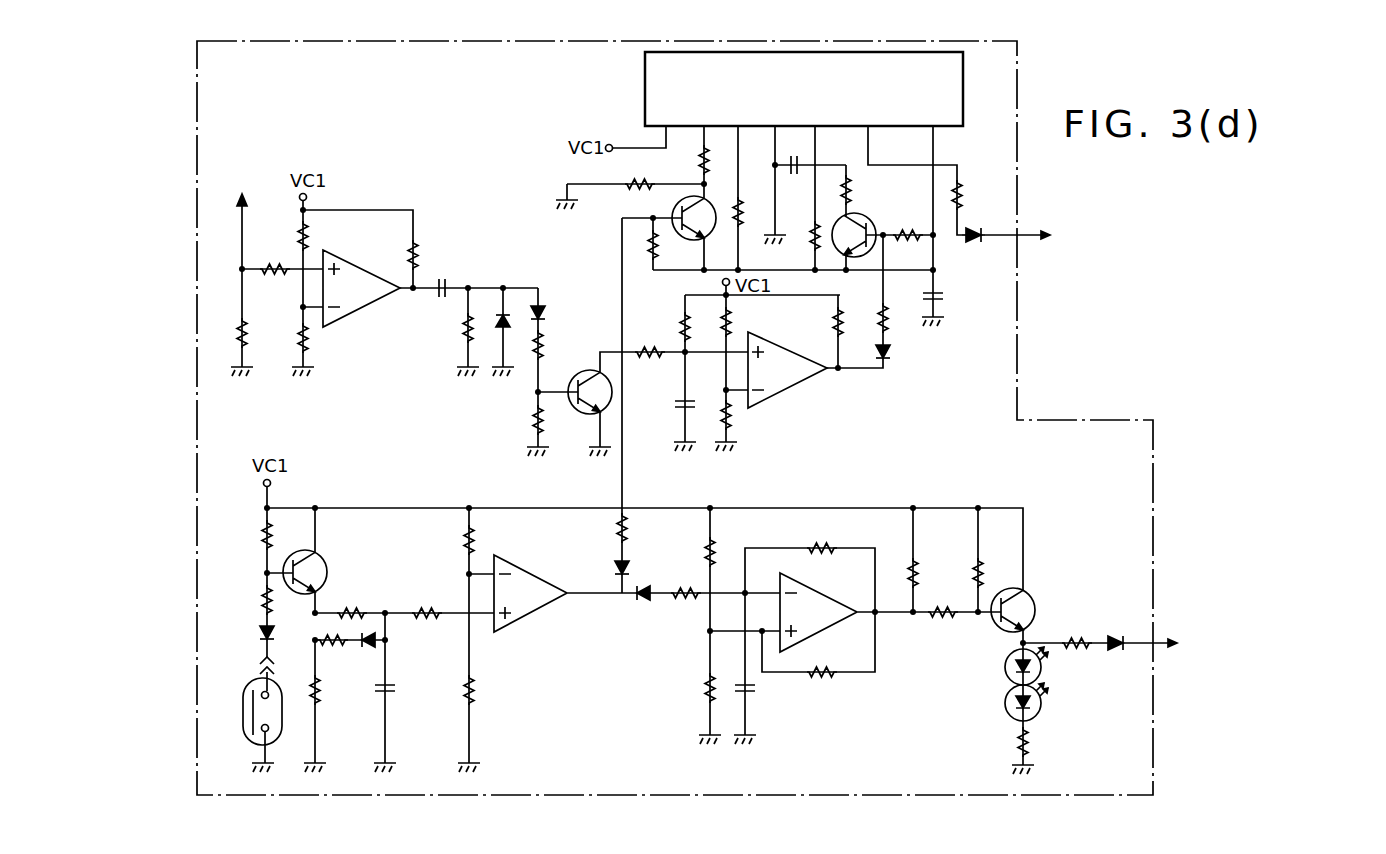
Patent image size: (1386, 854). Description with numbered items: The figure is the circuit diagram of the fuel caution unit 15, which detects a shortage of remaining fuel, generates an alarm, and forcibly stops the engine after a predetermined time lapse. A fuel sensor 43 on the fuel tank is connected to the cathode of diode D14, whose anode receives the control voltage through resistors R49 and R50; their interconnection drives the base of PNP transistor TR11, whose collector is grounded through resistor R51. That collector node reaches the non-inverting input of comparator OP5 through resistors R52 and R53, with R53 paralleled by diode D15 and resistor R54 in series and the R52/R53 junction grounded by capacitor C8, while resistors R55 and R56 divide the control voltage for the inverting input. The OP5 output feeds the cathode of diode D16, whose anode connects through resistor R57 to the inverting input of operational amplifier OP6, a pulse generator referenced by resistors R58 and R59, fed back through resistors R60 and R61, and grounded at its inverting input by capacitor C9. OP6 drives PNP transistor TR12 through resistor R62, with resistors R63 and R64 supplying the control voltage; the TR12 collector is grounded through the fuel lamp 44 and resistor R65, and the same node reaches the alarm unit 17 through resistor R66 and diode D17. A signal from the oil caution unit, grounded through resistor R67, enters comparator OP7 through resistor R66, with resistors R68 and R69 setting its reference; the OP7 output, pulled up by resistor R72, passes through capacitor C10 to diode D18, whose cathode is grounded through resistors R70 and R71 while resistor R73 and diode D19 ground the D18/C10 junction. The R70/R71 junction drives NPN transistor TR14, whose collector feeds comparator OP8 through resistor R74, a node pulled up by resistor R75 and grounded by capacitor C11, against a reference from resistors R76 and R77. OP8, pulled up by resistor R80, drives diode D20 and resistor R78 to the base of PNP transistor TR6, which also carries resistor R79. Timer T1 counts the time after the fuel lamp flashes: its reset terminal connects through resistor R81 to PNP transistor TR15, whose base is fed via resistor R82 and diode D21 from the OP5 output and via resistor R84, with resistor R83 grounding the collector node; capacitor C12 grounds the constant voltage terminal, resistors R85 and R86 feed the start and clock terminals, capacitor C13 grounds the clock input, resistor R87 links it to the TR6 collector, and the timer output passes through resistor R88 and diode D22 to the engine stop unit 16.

The fuel caution unit 15 is at (1017, 402).
The engine stop unit 16 is at (1137, 235).
The alarm unit 17 is at (1238, 643).
The fuel sensor 43 is at (272, 742).
The fuel lamp 44 is at (1006, 686).
The timer T1 is at (645, 78).
The PNP transistor TR15 is at (669, 227).
The PNP transistor TR6 is at (863, 232).
The NPN transistor TR14 is at (589, 400).
The PNP transistor TR11 is at (323, 560).
The PNP transistor TR12 is at (1040, 613).
The comparator OP5 is at (537, 619).
The operational amplifier OP6 is at (825, 593).
The comparator OP7 is at (348, 264).
The comparator OP8 is at (787, 394).
The resistor R49 is at (244, 600).
The resistor R50 is at (245, 536).
The resistor R51 is at (335, 723).
The resistor R52 is at (431, 599).
The resistor R53 is at (356, 599).
The resistor R54 is at (339, 652).
The resistor R55 is at (449, 540).
The resistor R56 is at (488, 723).
The resistor R57 is at (686, 582).
The resistor R58 is at (688, 552).
The resistor R59 is at (689, 708).
The resistor R60 is at (821, 538).
The resistor R61 is at (819, 687).
The resistor R62 is at (947, 600).
The resistor R63 is at (936, 560).
The resistor R64 is at (997, 560).
The resistor R65 is at (1043, 750).
The resistor R66 is at (282, 257).
The resistor R67 is at (259, 347).
The resistor R68 is at (324, 235).
The resistor R69 is at (321, 349).
The resistor R70 is at (558, 358).
The resistor R71 is at (555, 424).
The resistor R72 is at (381, 249).
The resistor R73 is at (445, 332).
The resistor R74 is at (691, 339).
The resistor R75 is at (666, 323).
The resistor R76 is at (746, 320).
The resistor R77 is at (744, 425).
The resistor R78 is at (902, 291).
The resistor R79 is at (908, 224).
The resistor R80 is at (817, 331).
The resistor R81 is at (687, 161).
The resistor R82 is at (644, 528).
The resistor R83 is at (630, 181).
The resistor R84 is at (674, 244).
The resistor R85 is at (757, 200).
The resistor R86 is at (800, 227).
The resistor R87 is at (866, 190).
The resistor R88 is at (975, 189).
The capacitor C8 is at (399, 720).
The capacitor C9 is at (757, 706).
The capacitor C10 is at (450, 277).
The capacitor C11 is at (666, 401).
The capacitor C12 is at (950, 300).
The capacitor C13 is at (810, 171).
The diode D14 is at (288, 631).
The diode D15 is at (400, 650).
The diode D16 is at (647, 609).
The diode D17 is at (1117, 631).
The diode D18 is at (561, 309).
The diode D19 is at (495, 332).
The diode D20 is at (880, 361).
The diode D21 is at (601, 571).
The diode D22 is at (977, 250).